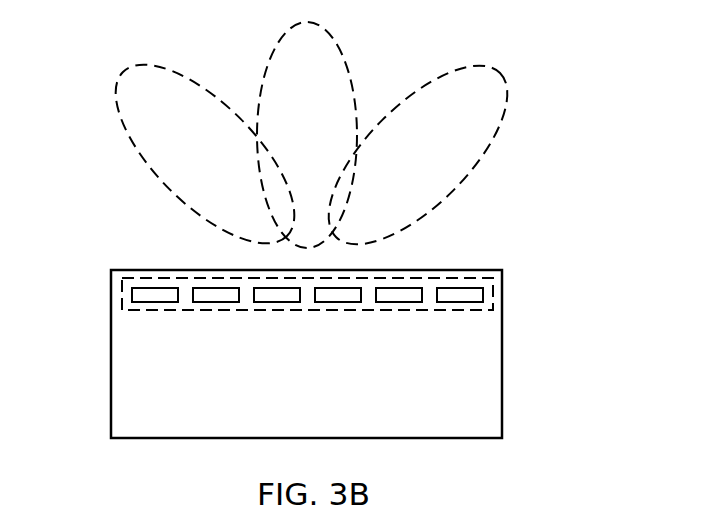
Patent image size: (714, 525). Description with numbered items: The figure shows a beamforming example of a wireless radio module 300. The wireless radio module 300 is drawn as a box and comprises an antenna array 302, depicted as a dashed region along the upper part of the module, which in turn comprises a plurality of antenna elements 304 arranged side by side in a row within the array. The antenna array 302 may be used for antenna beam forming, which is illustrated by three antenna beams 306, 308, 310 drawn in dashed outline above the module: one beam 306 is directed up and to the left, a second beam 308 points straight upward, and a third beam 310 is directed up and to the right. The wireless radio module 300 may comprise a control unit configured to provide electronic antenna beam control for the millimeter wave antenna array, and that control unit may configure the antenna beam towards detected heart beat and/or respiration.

The wireless radio module 300 is at (502, 358).
The antenna array 302 is at (494, 294).
The antenna elements 304 is at (132, 297).
The antenna beam 306 is at (165, 72).
The antenna beam 308 is at (342, 56).
The antenna beam 310 is at (503, 108).